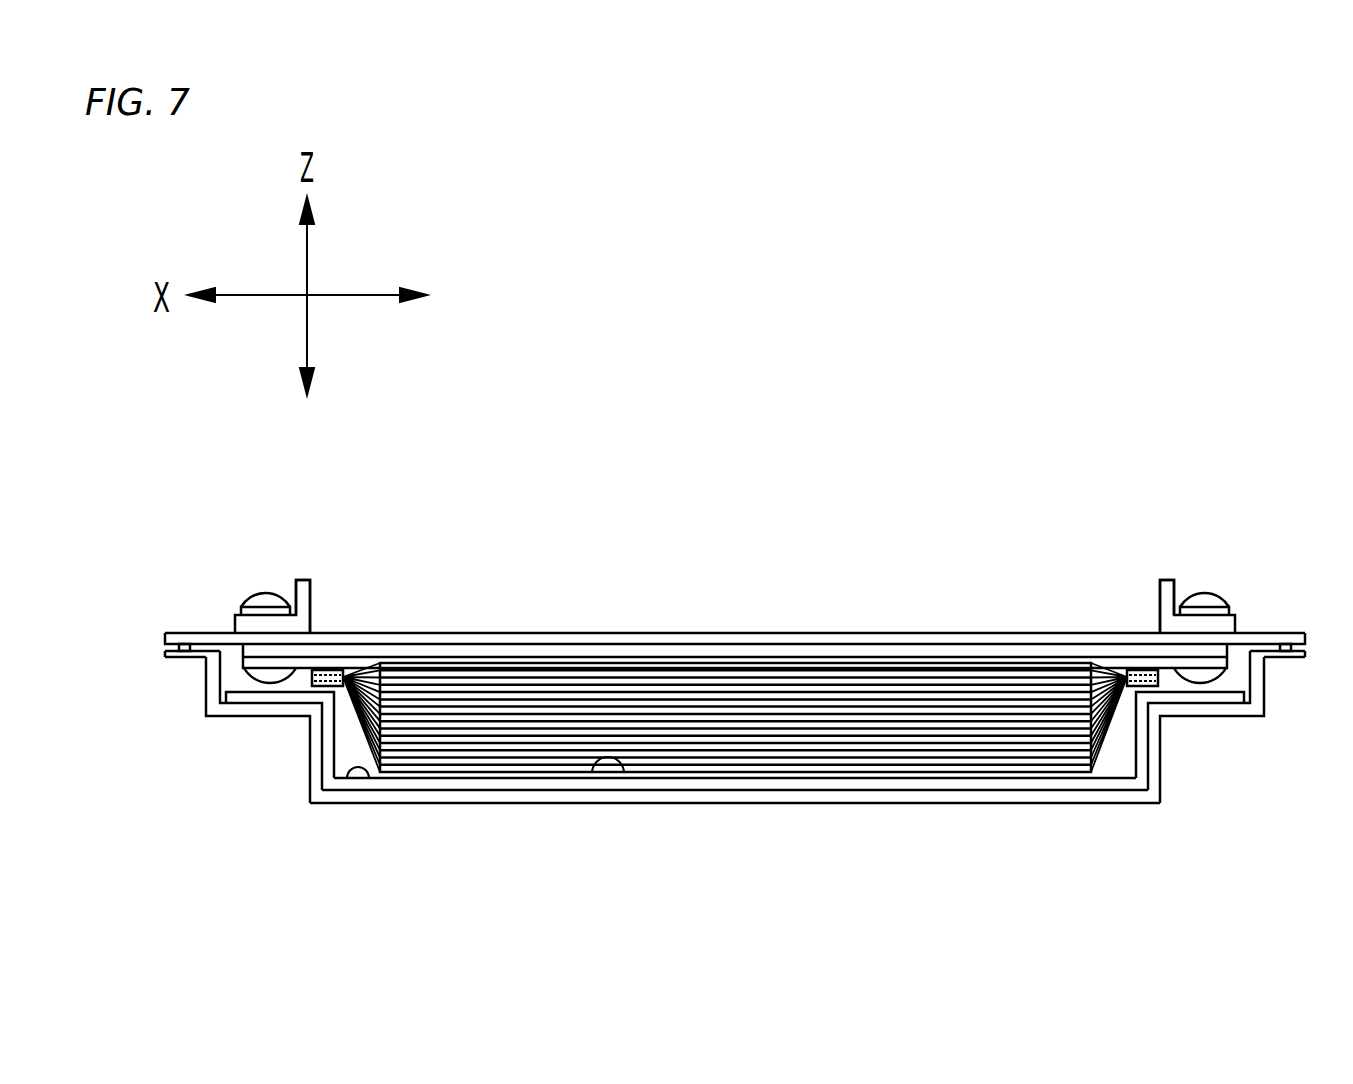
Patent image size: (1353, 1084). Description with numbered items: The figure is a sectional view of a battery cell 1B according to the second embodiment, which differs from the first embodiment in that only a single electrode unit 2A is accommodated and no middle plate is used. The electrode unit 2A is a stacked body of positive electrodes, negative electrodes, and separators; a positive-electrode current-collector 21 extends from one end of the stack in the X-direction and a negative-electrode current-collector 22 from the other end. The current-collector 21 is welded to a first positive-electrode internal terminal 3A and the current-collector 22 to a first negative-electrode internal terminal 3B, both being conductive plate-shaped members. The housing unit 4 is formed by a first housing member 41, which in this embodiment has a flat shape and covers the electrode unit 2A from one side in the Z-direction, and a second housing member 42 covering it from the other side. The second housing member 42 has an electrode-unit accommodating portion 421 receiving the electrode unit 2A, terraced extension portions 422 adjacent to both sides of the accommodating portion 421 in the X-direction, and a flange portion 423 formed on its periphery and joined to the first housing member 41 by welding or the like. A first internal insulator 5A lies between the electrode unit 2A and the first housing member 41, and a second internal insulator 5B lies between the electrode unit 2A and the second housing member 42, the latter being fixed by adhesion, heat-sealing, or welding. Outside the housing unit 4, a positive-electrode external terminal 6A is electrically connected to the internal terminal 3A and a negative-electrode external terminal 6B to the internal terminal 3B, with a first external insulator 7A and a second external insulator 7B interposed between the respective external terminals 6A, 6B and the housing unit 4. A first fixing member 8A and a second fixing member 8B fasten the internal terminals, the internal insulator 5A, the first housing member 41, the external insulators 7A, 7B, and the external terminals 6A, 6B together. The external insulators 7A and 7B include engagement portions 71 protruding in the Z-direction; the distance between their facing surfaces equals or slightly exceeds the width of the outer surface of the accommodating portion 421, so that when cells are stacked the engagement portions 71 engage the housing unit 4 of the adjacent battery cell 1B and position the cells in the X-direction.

The battery cell 1B is at (1010, 508).
The electrode unit 2A is at (763, 725).
The positive-electrode current-collector 21 is at (358, 723).
The negative-electrode current-collector 22 is at (1110, 737).
The first positive-electrode internal terminal 3A is at (272, 672).
The first negative-electrode internal terminal 3B is at (1172, 683).
The housing unit 4 is at (632, 616).
The first housing member 41 is at (754, 630).
The second housing member 42 is at (1047, 805).
The electrode-unit accommodating portion 421 is at (620, 760).
The extension portion 422 is at (1226, 686).
The flange portion 423 is at (1287, 660).
The first internal insulator 5A is at (472, 662).
The second internal insulator 5B is at (348, 780).
The positive-electrode external terminal 6A is at (240, 610).
The negative-electrode external terminal 6B is at (1230, 610).
The first external insulator 7A is at (233, 626).
The second external insulator 7B is at (1238, 626).
The engagement portion 71 is at (305, 580).
The first fixing member 8A is at (264, 592).
The second fixing member 8B is at (1197, 595).